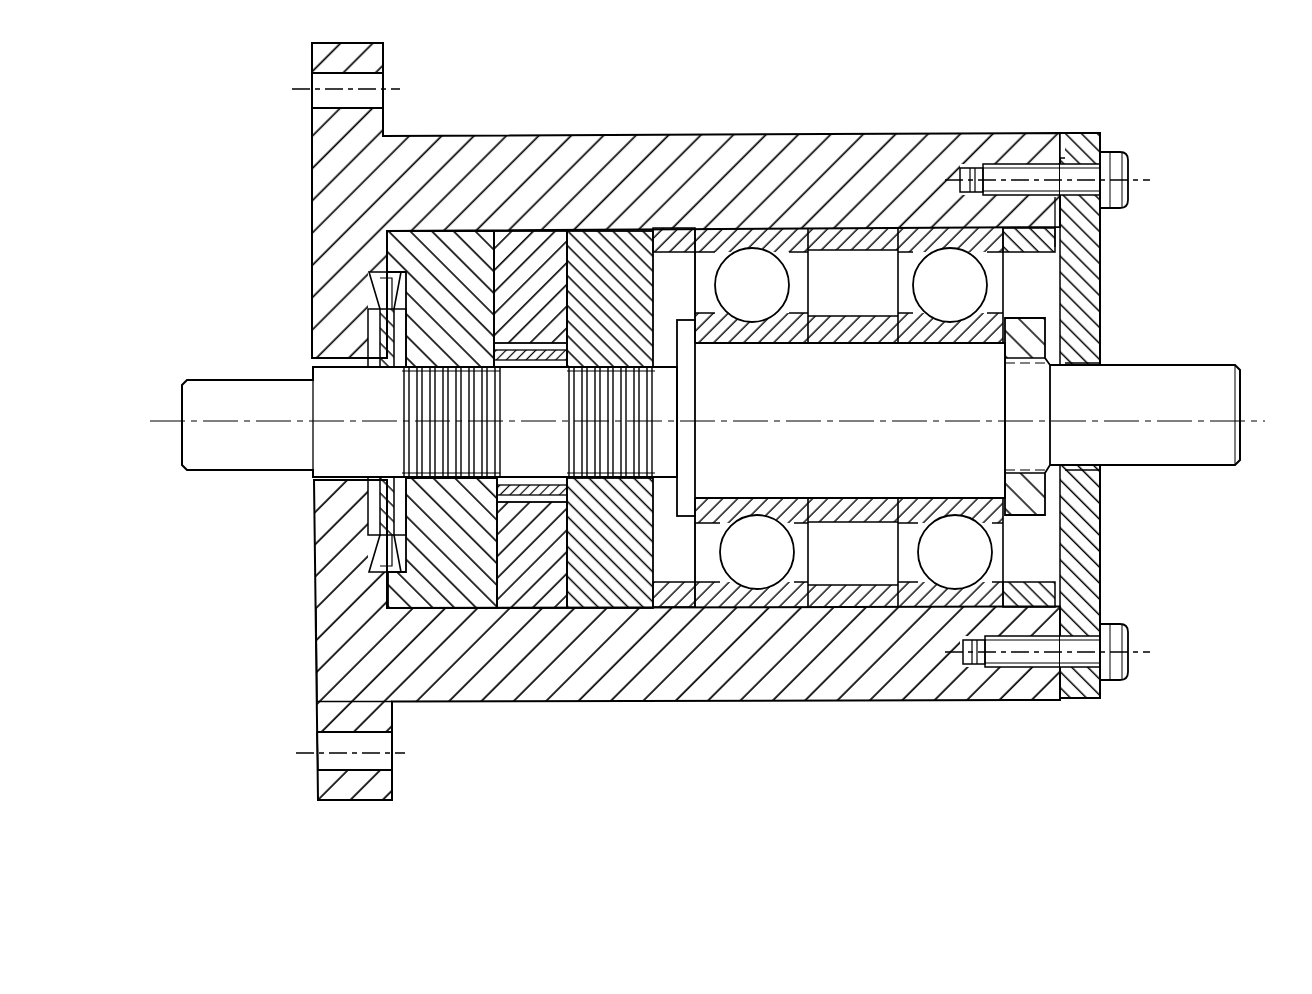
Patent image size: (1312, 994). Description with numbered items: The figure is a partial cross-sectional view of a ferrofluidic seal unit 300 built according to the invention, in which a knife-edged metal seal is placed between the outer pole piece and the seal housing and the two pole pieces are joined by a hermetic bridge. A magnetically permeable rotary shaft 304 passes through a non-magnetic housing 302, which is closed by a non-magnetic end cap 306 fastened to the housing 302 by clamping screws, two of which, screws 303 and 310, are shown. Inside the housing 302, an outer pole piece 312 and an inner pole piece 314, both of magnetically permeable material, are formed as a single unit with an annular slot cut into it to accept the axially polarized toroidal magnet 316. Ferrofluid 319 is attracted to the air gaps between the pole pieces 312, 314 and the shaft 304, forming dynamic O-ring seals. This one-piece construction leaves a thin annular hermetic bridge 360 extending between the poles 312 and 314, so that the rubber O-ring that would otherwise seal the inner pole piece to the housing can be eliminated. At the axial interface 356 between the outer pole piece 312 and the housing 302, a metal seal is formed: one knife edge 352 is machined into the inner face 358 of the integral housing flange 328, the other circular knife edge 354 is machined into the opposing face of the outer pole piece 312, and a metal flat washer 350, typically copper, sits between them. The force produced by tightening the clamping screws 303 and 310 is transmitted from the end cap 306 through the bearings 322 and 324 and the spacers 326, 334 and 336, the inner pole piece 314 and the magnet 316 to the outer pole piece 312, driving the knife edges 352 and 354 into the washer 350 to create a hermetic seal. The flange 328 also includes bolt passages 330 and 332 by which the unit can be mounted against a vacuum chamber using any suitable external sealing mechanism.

The ferrofluidic seal unit 300 is at (1028, 128).
The housing 302 is at (815, 665).
The clamping screw 303 is at (1130, 165).
The rotary shaft 304 is at (1175, 455).
The end cap 306 is at (1085, 553).
The clamping screw 310 is at (1135, 638).
The outer pole piece 312 is at (395, 582).
The inner pole piece 314 is at (585, 252).
The magnet 316 is at (535, 595).
The ferrofluid 319 is at (622, 350).
The bearing 322 is at (752, 245).
The bearing 324 is at (925, 235).
The spacer 326 is at (682, 592).
The integral housing flange 328 is at (322, 57).
The flange bolt hole 330 is at (322, 99).
The flange bolt hole 332 is at (325, 763).
The spacer 334 is at (880, 597).
The spacer 336 is at (1033, 595).
The metal flat washer 350 is at (380, 307).
The knife edge 352 is at (373, 540).
The knife edge 354 is at (390, 570).
The axial interface 356 is at (332, 635).
The inner face of the integral housing flange 358 is at (385, 255).
The hermetic bridge 360 is at (553, 488).